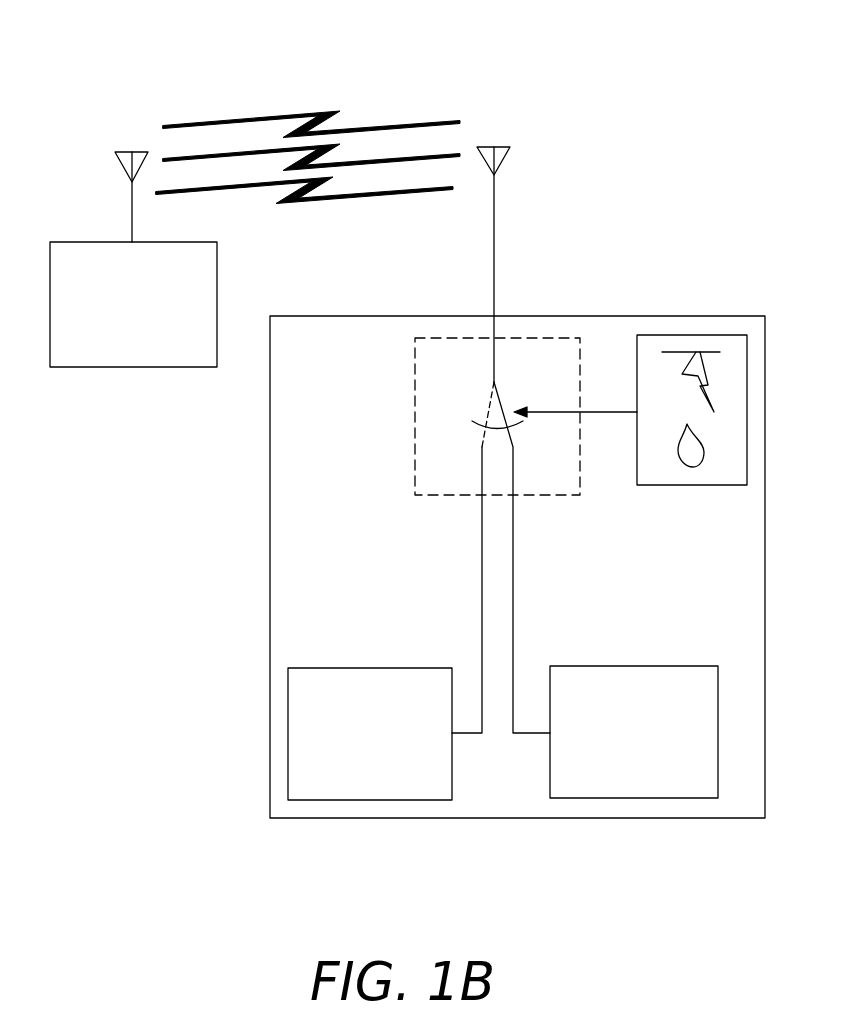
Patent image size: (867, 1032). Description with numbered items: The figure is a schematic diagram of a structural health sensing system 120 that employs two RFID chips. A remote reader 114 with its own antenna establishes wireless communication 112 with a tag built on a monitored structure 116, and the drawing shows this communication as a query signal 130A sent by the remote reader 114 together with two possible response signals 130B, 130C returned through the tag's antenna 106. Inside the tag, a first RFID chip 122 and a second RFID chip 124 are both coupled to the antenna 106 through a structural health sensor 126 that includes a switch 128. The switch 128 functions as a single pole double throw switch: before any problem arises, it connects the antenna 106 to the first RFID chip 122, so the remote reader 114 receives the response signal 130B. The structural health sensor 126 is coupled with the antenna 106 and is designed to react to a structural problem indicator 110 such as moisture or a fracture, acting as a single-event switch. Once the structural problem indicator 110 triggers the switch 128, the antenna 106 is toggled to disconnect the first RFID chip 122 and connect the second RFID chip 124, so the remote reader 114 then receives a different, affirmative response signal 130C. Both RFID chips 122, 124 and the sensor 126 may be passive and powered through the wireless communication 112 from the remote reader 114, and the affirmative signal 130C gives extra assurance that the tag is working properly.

The antenna 106 is at (497, 147).
The structural problem indicator 110 is at (692, 335).
The wireless communication 112 is at (326, 159).
The remote reader 114 is at (135, 367).
The structure 116 is at (272, 742).
The structural health sensing system 120 is at (484, 466).
The first RFID chip 122 is at (677, 664).
The second RFID chip 124 is at (322, 668).
The structural health sensor 126 is at (469, 507).
The switch 128 is at (470, 412).
The query signal 130A is at (318, 114).
The response signal 130B is at (453, 158).
The response signal 130C is at (330, 198).